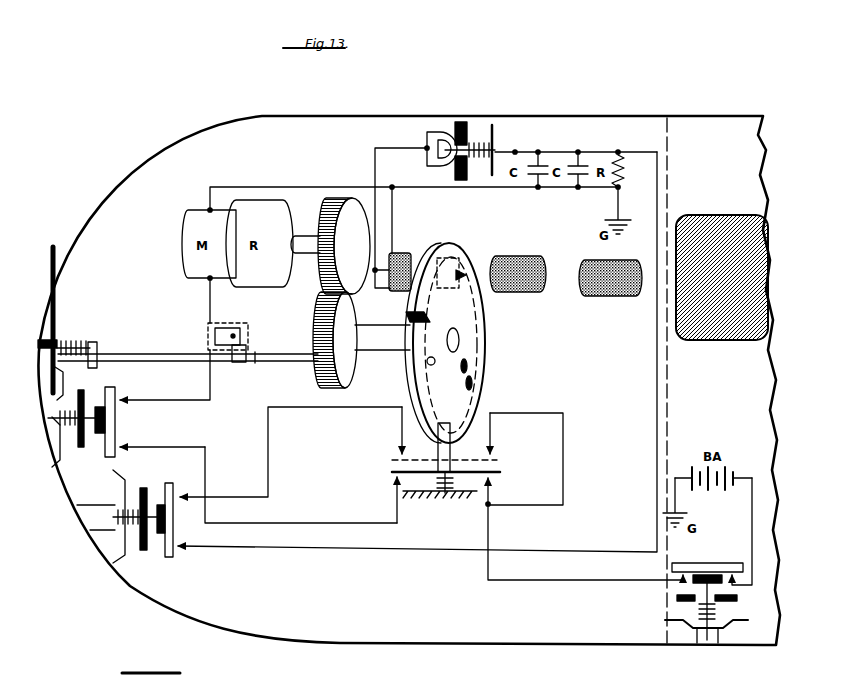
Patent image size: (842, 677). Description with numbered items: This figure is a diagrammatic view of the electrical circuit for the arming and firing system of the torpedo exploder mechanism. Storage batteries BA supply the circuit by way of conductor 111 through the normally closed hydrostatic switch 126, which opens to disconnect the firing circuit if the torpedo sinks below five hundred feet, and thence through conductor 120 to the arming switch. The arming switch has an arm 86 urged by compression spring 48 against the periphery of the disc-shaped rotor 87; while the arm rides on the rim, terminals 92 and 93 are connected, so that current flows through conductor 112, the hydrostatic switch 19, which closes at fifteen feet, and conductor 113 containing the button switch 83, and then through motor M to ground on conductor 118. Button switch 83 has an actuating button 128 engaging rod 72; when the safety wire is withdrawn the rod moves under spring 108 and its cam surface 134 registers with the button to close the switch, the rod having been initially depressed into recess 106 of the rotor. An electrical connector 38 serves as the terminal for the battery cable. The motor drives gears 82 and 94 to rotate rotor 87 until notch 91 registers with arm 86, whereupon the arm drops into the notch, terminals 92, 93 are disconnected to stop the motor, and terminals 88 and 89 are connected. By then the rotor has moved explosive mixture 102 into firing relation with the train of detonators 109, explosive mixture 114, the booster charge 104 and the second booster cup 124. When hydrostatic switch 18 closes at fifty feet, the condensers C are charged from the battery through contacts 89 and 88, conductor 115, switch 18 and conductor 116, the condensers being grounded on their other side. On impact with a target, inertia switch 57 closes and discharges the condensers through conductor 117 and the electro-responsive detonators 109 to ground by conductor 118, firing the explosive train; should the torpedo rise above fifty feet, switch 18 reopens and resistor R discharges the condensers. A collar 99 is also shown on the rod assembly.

The hydrostatic switch 18 is at (150, 550).
The hydrostatic switch 19 is at (74, 452).
The electrical connector 38 is at (50, 264).
The compression spring 48 is at (452, 500).
The inertia switch 57 is at (424, 140).
The rod 72 is at (152, 354).
The gear 82 is at (324, 214).
The button switch 83 is at (252, 318).
The arm 86 is at (452, 455).
The rotor 87 is at (488, 352).
The terminal 88 is at (398, 458).
The terminal 89 is at (496, 460).
The notch 91 is at (430, 328).
The terminal 92 is at (392, 480).
The terminal 93 is at (496, 480).
The gear 94 is at (318, 382).
The collar 99 is at (96, 342).
The explosive mixture 102 is at (466, 390).
The booster charge 104 is at (600, 294).
The recess 106 is at (452, 352).
The spring 108 is at (76, 343).
The electro-responsive detonator 109 is at (400, 252).
The conductor 111 is at (752, 540).
The conductor 112 is at (338, 523).
The conductor 113 is at (178, 400).
The explosive mixture 114 is at (508, 293).
The conductor 115 is at (226, 486).
The conductor 116 is at (655, 345).
The conductor 117 is at (373, 168).
The conductor 118 is at (508, 190).
The conductor 120 is at (538, 580).
The second booster cup 124 is at (710, 342).
The hydrostatic switch 126 is at (674, 610).
The actuating button 128 is at (236, 363).
The cam surface 134 is at (257, 352).